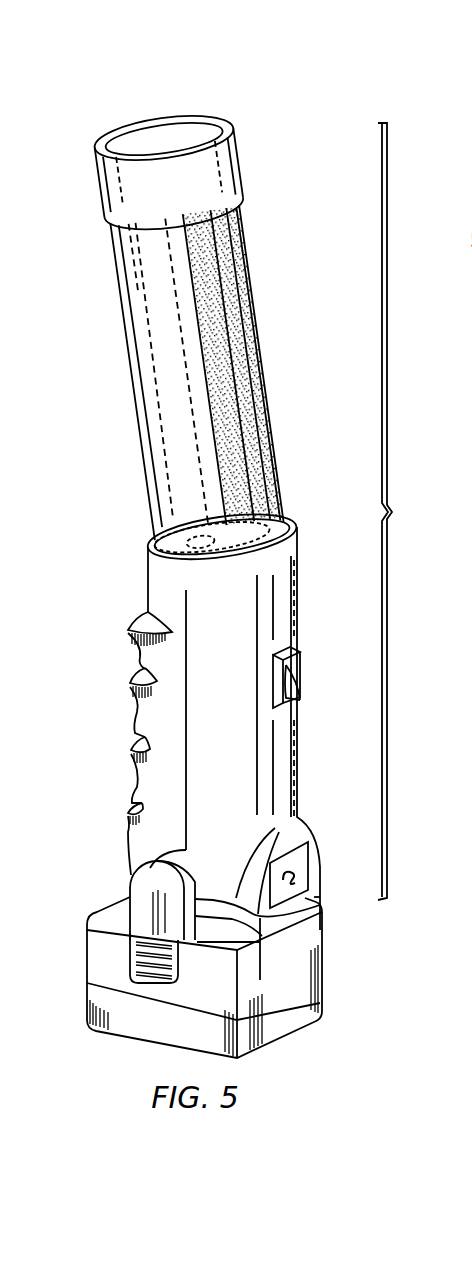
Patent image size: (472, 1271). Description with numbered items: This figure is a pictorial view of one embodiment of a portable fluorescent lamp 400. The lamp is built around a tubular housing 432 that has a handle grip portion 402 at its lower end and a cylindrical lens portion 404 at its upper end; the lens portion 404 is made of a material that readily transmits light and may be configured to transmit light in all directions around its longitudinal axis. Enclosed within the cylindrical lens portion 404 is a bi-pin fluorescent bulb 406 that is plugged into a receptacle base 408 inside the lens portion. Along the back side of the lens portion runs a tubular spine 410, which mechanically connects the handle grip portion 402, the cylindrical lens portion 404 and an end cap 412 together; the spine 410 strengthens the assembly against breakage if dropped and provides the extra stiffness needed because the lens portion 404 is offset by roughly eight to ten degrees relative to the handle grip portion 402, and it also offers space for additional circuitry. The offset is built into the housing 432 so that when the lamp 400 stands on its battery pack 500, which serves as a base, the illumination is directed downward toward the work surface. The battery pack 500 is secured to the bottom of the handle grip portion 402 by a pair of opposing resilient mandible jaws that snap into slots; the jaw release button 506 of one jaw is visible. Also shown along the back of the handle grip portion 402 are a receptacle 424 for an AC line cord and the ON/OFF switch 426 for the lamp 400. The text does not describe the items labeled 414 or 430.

The portable fluorescent lamp 400 is at (149, 70).
The handle grip portion 402 is at (138, 708).
The cylindrical lens portion 404 is at (138, 405).
The bi-pin fluorescent bulb 406 is at (158, 315).
The receptacle base 408 is at (168, 545).
The tubular spine 410 is at (256, 343).
The end cap 412 is at (213, 125).
The lens opening 414 is at (138, 142).
The receptacle 424 is at (300, 856).
The ON/OFF switch 426 is at (293, 682).
The latch 430 is at (131, 878).
The tubular housing 432 is at (403, 511).
The battery pack 500 is at (88, 944).
The jaw release button 506 is at (158, 977).